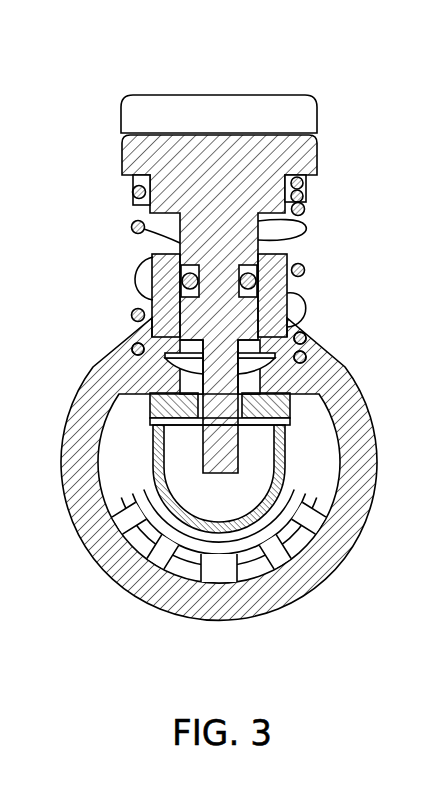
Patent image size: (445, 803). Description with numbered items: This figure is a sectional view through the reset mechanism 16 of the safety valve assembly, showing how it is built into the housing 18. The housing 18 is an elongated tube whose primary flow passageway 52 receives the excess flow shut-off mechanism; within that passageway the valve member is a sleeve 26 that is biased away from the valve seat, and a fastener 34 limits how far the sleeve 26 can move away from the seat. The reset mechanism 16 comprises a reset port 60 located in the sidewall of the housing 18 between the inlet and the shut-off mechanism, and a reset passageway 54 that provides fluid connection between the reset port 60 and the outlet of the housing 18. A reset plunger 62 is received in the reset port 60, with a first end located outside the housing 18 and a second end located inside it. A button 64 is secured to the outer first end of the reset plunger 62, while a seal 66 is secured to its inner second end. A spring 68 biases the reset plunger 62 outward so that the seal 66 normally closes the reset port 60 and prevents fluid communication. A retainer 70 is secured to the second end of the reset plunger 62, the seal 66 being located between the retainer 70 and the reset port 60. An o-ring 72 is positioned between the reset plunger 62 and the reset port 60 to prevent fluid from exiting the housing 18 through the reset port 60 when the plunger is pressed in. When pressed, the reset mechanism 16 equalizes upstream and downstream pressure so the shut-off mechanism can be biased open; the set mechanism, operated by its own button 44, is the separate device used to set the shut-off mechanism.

The reset mechanism 16 is at (330, 132).
The housing 18 is at (233, 469).
The sleeve 26 is at (130, 594).
The fastener 34 is at (293, 531).
The button 44 is at (133, 113).
The primary flow passageway 52 is at (288, 426).
The reset passageway 54 is at (168, 370).
The reset port 60 is at (150, 232).
The reset plunger 62 is at (288, 290).
The button 64 is at (314, 160).
The seal 66 is at (280, 410).
The spring 68 is at (308, 203).
The retainer 70 is at (84, 545).
The o-ring 72 is at (143, 316).